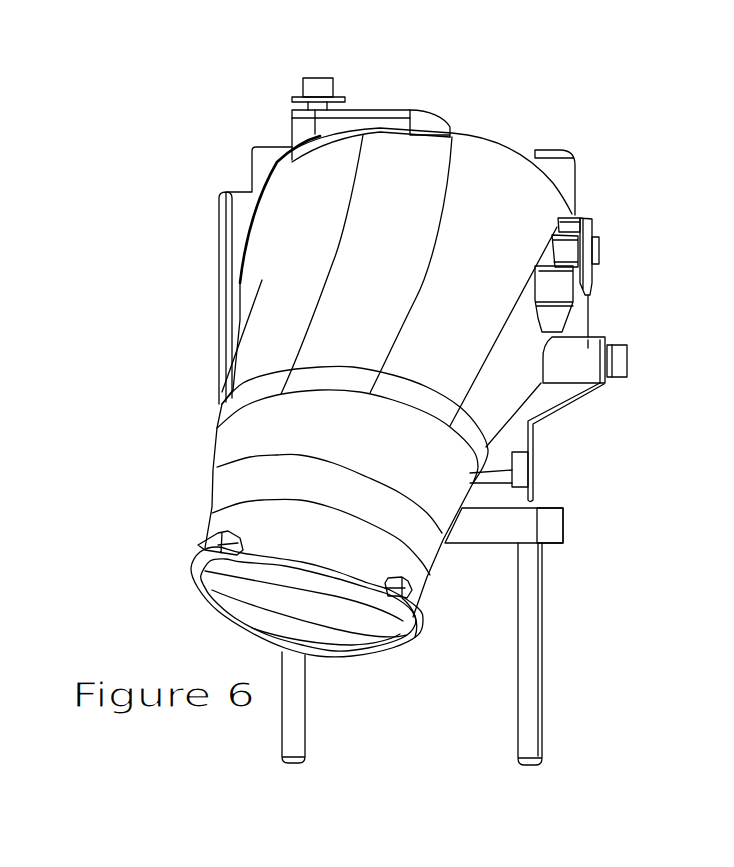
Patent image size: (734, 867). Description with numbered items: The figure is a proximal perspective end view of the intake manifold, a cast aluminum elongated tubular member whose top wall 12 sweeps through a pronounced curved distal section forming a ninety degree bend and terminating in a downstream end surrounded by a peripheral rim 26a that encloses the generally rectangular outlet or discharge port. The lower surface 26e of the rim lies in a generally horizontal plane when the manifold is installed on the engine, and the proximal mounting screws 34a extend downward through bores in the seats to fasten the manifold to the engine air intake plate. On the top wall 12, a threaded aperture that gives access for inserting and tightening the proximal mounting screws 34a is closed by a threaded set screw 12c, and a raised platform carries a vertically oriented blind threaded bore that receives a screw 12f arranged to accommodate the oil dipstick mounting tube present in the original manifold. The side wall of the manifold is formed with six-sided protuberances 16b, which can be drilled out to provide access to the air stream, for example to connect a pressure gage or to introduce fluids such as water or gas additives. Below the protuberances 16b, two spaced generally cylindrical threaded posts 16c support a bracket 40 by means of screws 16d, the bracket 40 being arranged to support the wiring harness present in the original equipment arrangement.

The top wall 12 is at (390, 259).
The threaded set screw 12c is at (382, 110).
The screw 12f is at (318, 78).
The six-sided protuberance 16b is at (582, 217).
The cylindrical threaded post 16c is at (588, 350).
The screw 16d is at (628, 352).
The bracket 40 is at (564, 416).
The peripheral rim 26a is at (563, 522).
The lower surface of the rim 26e is at (462, 545).
The proximal mounting screw 34a is at (515, 741).